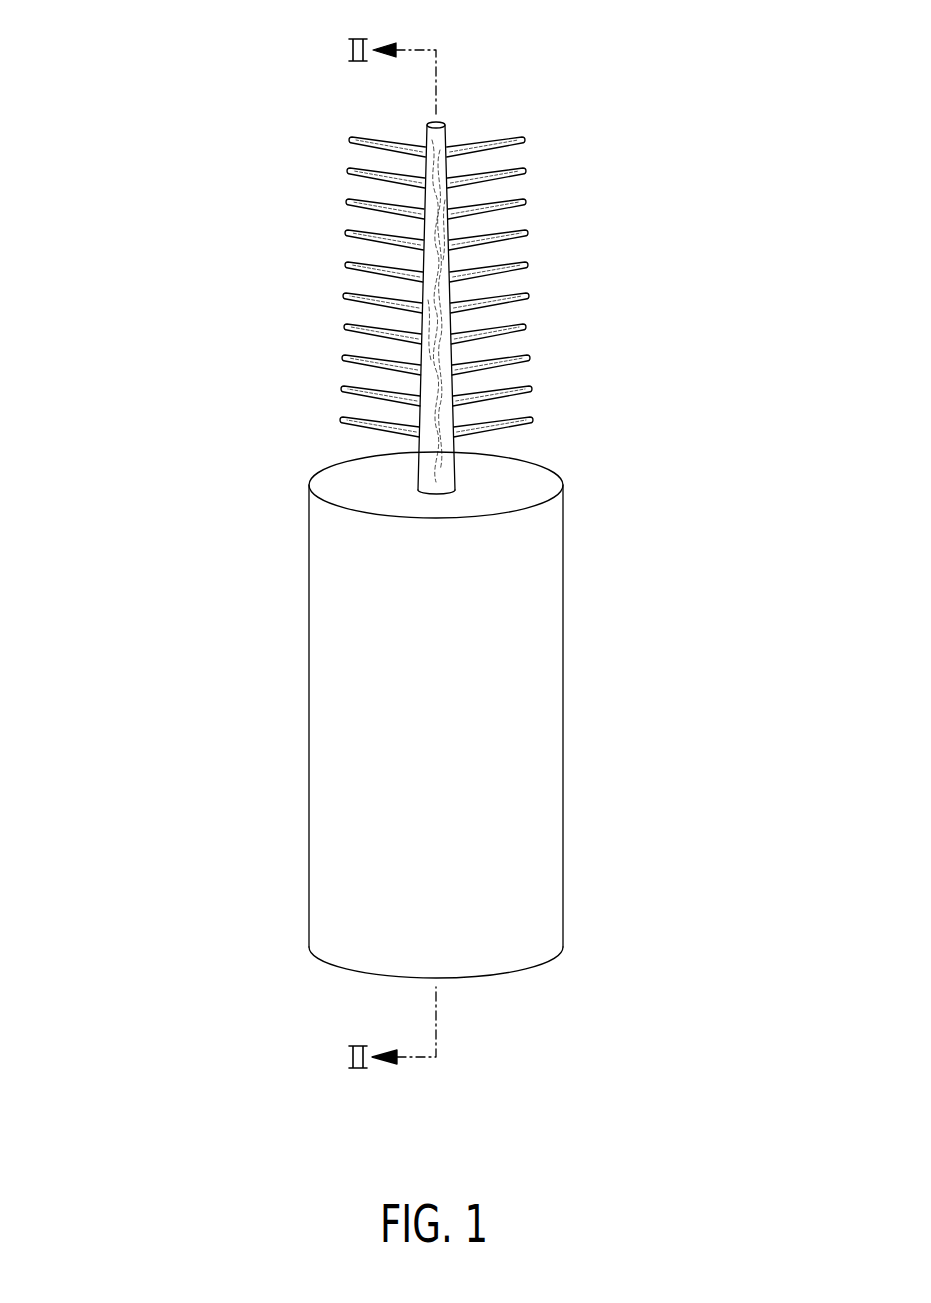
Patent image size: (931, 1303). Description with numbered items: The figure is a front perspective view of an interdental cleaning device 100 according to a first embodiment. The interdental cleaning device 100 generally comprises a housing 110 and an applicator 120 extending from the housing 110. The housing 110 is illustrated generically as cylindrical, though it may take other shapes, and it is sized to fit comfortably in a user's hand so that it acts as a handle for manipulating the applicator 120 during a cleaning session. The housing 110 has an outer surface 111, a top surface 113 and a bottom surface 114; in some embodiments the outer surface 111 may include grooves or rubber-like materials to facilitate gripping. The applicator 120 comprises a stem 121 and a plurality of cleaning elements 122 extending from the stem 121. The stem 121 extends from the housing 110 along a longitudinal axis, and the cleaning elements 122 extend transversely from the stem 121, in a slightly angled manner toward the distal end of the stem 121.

The interdental cleaning device 100 is at (95, 195).
The housing 110 is at (286, 647).
The outer surface 111 is at (347, 797).
The top surface 113 is at (545, 483).
The bottom surface 114 is at (533, 967).
The applicator 120 is at (303, 195).
The stem 121 is at (520, 385).
The cleaning element 122 is at (517, 140).